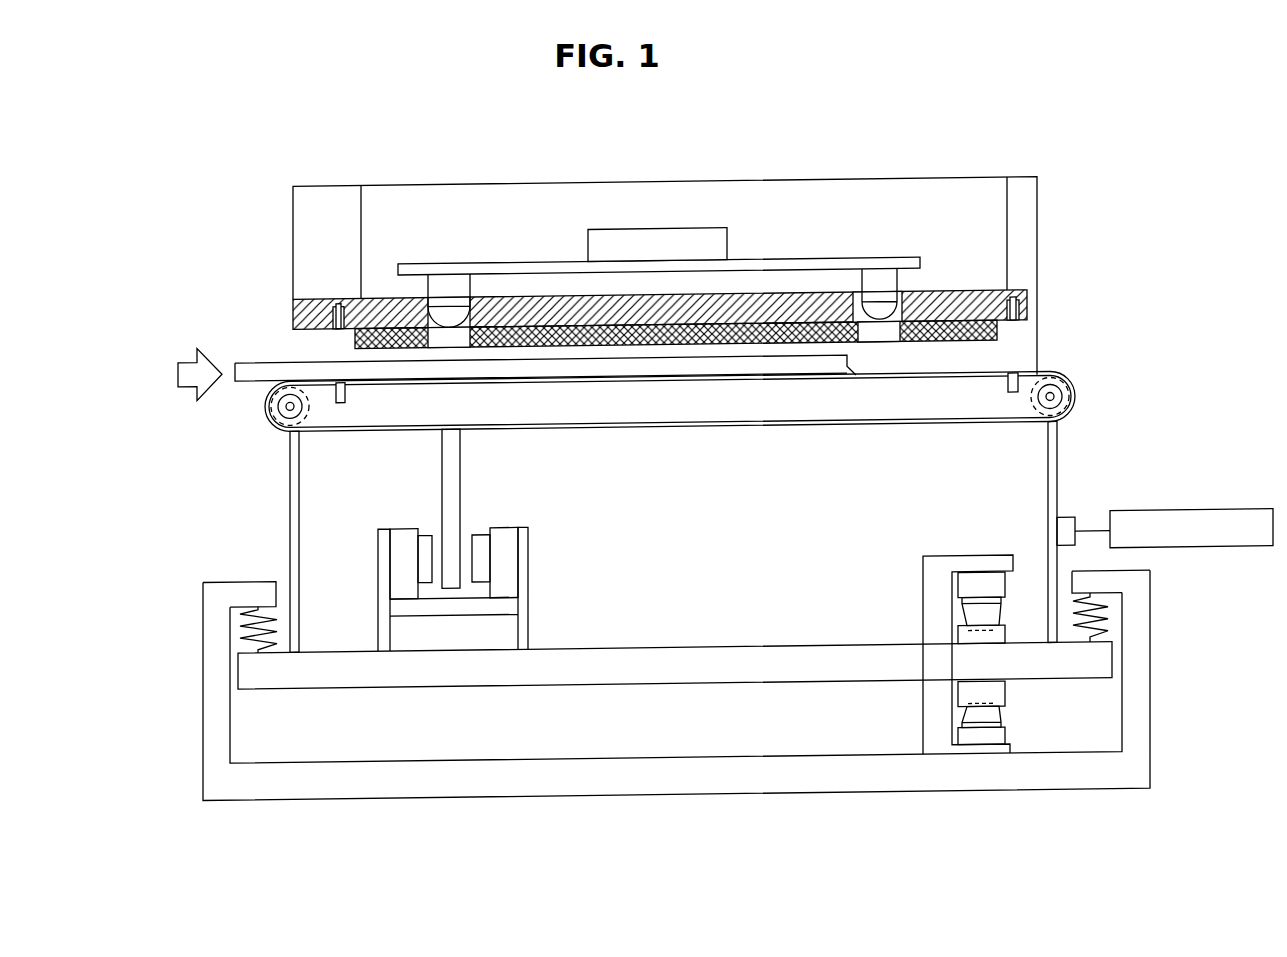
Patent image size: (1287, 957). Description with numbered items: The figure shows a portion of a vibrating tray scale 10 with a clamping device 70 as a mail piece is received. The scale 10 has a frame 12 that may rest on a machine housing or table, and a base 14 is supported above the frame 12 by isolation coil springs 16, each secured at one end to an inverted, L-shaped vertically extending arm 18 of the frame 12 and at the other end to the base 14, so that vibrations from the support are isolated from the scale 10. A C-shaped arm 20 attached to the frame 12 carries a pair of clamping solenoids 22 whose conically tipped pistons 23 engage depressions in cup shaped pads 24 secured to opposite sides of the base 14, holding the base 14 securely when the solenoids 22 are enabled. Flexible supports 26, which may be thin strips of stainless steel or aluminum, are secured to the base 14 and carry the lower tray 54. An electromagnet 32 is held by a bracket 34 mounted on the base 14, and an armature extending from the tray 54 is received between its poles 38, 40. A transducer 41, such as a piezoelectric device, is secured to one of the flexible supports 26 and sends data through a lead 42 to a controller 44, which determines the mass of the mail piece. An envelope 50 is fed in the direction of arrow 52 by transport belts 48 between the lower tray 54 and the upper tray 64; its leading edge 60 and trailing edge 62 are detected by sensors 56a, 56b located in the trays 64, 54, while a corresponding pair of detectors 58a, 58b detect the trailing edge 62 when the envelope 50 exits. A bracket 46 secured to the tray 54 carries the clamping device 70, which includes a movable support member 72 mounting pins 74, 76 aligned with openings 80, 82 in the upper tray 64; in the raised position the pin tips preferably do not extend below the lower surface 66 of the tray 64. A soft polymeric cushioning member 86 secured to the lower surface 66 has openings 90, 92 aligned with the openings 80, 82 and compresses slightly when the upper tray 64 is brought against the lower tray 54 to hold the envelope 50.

The vibrating tray scale 10 is at (190, 207).
The frame 12 is at (672, 759).
The base 14 is at (725, 647).
The isolation coil springs 16 is at (275, 629).
The inverted L-shaped vertically extending arm 18 is at (250, 578).
The C-shaped arm 20 is at (933, 573).
The clamping solenoids 22 is at (1005, 593).
The pistons 23 is at (960, 620).
The cup shaped pads 24 is at (958, 637).
The flexible supports 26 is at (288, 516).
The electromagnet 32 is at (508, 527).
The bracket 34 is at (528, 627).
The pole 38 is at (432, 531).
The pole 40 is at (473, 537).
The transducer 41 is at (1067, 525).
The lead 42 is at (1085, 532).
The controller 44 is at (1165, 518).
The bracket 46 is at (1038, 218).
The transport belts 48 is at (658, 429).
The envelope 50 is at (270, 359).
The arrow 52 is at (207, 381).
The lower tray 54 is at (567, 412).
The sensor 56a is at (338, 301).
The sensor 56b is at (343, 402).
The detector 58a is at (1005, 310).
The detector 58b is at (1012, 404).
The leading edge 60 is at (858, 382).
The trailing edge 62 is at (230, 364).
The upper tray 64 is at (953, 305).
The lower surface 66 is at (788, 323).
The clamping device 70 is at (722, 176).
The movable support member 72 is at (545, 262).
The pin 74 is at (447, 284).
The pin 76 is at (877, 287).
The opening 80 is at (426, 311).
The opening 82 is at (838, 324).
The cushioning member 86 is at (997, 336).
The opening 90 is at (450, 340).
The opening 92 is at (877, 346).